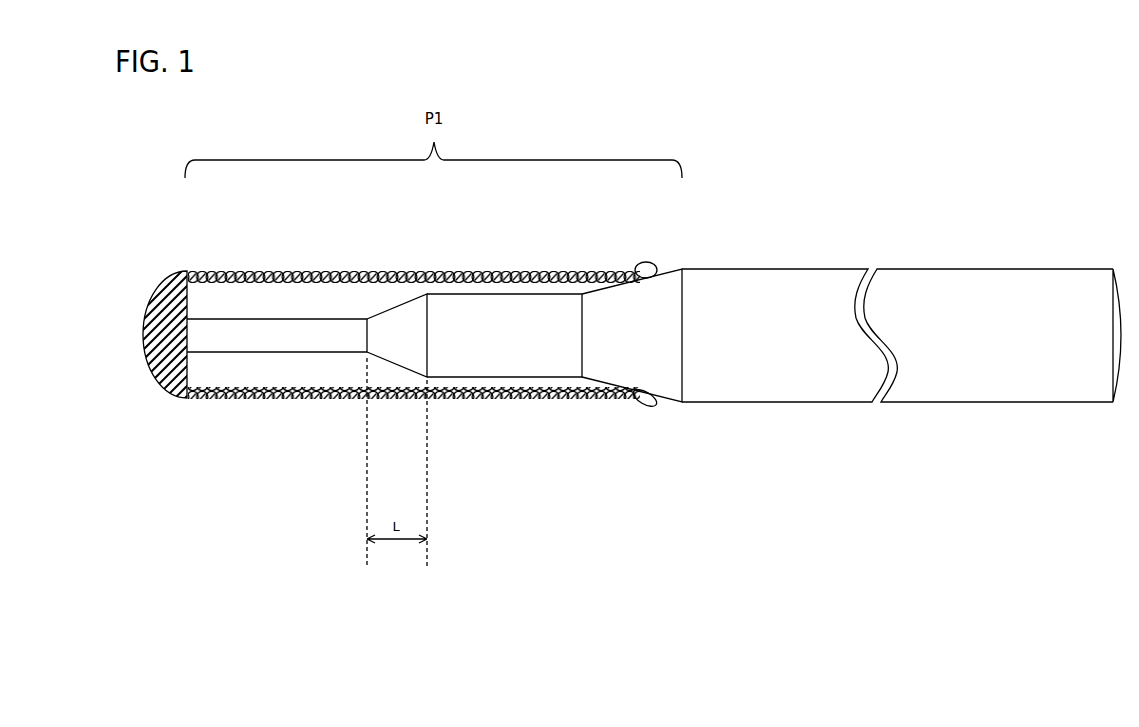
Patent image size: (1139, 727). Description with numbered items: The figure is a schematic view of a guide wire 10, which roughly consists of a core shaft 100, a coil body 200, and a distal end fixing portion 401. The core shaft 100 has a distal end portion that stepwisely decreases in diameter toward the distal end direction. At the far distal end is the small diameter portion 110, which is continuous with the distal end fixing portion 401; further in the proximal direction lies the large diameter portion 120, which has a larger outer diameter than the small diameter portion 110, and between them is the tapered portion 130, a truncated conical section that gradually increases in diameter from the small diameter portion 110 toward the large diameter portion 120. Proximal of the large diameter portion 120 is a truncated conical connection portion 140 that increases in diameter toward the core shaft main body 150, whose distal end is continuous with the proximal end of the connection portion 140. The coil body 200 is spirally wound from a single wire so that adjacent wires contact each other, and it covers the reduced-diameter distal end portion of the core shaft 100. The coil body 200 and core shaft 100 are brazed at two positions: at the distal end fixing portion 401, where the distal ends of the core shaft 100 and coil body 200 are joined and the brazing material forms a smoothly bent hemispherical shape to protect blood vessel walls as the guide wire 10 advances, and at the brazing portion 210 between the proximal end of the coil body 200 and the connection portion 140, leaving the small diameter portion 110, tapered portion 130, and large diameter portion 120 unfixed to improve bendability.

The guide wire 10 is at (992, 243).
The core shaft 100 is at (755, 262).
The small diameter portion 110 is at (258, 332).
The large diameter portion 120 is at (535, 350).
The tapered portion 130 is at (413, 345).
The connection portion 140 is at (660, 368).
The core shaft main body 150 is at (800, 373).
The coil body 200 is at (383, 273).
The brazing portion 210 is at (650, 268).
The distal end fixing portion 401 is at (160, 385).